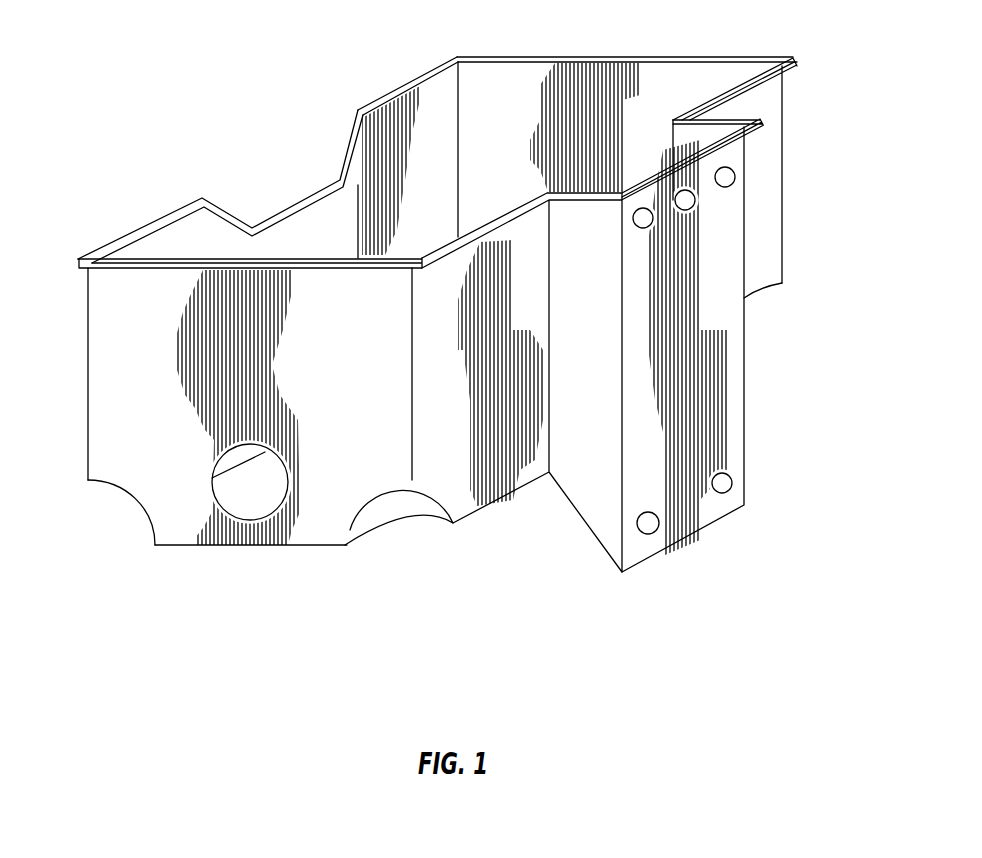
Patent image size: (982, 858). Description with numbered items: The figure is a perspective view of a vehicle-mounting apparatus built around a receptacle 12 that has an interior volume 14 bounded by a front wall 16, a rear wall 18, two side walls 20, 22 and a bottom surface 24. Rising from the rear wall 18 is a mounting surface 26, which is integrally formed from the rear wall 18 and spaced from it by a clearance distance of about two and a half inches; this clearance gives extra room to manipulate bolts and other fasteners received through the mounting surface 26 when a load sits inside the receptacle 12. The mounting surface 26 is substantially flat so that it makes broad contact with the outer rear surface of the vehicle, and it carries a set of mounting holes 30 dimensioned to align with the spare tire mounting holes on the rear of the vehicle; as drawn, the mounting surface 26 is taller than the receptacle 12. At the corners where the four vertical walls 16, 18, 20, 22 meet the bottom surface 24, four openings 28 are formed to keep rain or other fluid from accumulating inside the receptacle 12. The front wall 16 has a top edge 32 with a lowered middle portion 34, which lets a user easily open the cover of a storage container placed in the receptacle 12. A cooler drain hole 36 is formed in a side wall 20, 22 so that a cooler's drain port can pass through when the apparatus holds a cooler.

The receptacle 12 is at (550, 56).
The interior volume 14 is at (478, 160).
The front wall 16 is at (400, 86).
The rear wall 18 is at (740, 77).
The side wall 20 is at (165, 257).
The side wall 22 is at (628, 60).
The bottom surface 24 is at (255, 547).
The mounting surface 26 is at (713, 335).
The opening 28 is at (132, 504).
The mounting hole 30 is at (690, 201).
The top edge 32 is at (120, 236).
The lowered middle portion 34 is at (268, 150).
The cooler drain hole 36 is at (252, 446).